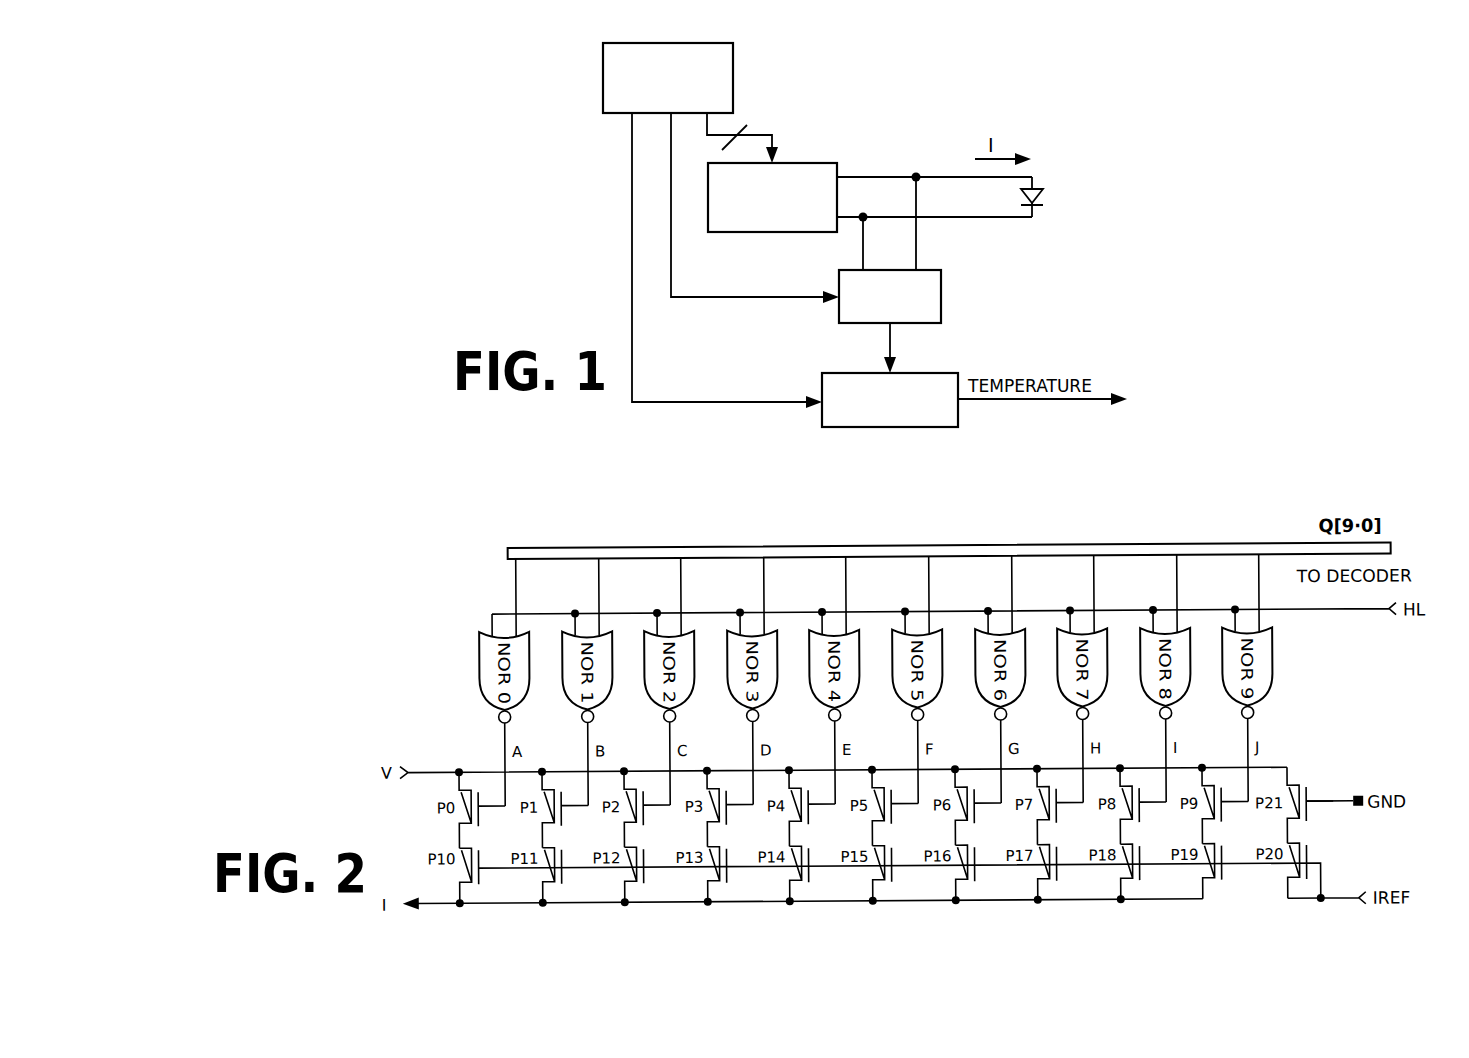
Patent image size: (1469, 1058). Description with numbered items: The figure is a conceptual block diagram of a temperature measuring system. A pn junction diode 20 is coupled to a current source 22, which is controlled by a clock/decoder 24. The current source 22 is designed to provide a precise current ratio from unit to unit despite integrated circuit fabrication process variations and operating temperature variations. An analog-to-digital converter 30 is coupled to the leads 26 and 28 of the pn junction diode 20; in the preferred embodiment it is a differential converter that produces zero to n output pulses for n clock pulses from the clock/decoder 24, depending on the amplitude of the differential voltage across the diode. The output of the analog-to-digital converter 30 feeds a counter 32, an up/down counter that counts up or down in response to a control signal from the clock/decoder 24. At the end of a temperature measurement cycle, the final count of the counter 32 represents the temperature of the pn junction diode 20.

The pn junction diode 20 is at (1044, 196).
The current source 22 is at (820, 163).
The clock/decoder 24 is at (733, 63).
The lead 26 is at (880, 177).
The lead 28 is at (1012, 217).
The analog-to-digital converter 30 is at (941, 295).
The counter 32 is at (833, 373).